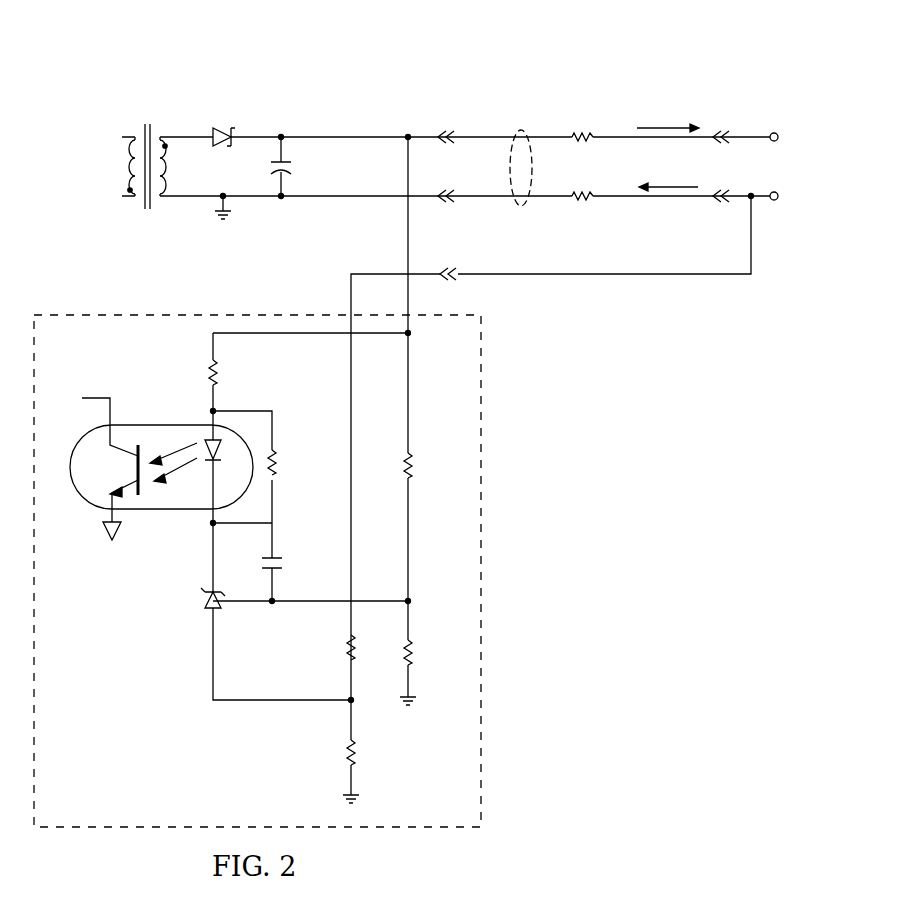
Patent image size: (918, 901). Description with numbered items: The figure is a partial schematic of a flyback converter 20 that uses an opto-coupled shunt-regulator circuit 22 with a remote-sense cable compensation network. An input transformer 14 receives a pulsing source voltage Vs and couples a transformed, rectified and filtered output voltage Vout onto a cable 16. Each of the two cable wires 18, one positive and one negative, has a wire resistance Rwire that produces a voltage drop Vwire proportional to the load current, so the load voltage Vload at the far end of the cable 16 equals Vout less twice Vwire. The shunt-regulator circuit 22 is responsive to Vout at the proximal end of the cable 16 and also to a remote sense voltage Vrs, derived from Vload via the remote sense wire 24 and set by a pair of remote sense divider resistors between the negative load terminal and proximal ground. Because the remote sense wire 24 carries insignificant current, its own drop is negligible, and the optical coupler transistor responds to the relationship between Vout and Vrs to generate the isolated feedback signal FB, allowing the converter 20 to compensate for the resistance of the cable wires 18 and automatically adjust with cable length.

The flyback converter 20 is at (296, 60).
The input transformer 14 is at (144, 124).
The cable 16 is at (524, 130).
The cable wires 18 is at (468, 135).
The shunt-regulator circuit 22 is at (131, 778).
The remote sense wire 24 is at (598, 278).